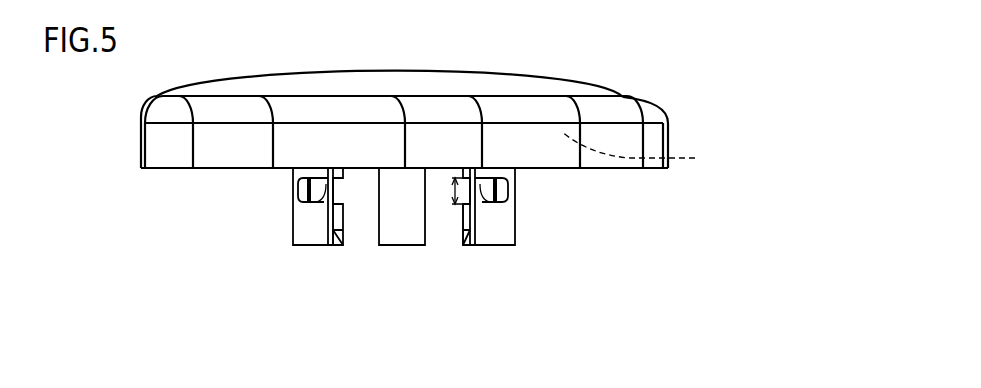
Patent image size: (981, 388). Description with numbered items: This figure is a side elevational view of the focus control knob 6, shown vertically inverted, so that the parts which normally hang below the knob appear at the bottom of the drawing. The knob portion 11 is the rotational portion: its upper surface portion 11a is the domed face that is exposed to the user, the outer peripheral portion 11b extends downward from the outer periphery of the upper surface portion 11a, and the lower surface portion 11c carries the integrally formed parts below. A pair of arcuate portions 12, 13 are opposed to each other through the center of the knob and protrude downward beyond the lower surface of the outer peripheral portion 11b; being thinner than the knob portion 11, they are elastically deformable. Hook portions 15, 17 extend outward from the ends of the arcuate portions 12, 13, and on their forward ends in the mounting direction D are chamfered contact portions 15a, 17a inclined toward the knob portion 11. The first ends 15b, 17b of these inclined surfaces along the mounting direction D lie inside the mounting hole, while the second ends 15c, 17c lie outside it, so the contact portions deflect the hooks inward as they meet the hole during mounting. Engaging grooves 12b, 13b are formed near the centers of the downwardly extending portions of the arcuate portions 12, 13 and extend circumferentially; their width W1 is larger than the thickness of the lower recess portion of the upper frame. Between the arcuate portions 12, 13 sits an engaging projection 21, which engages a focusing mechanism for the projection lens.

The focus control knob 6 is at (471, 62).
The knob portion 11 is at (734, 87).
The upper surface portion 11a is at (543, 82).
The outer peripheral portion 11b is at (657, 145).
The lower surface portion 11c is at (646, 150).
The arcuate portion 12 is at (506, 229).
The engaging groove 12b is at (508, 188).
The arcuate portion 13 is at (300, 231).
The engaging groove 13b is at (302, 187).
The hook portion 15 is at (465, 215).
The contact portion 15a is at (469, 240).
The first end 15b is at (470, 246).
The second end 15c is at (464, 243).
The hook portion 17 is at (342, 218).
The contact portion 17a is at (337, 247).
The first end 17b is at (340, 246).
The second end 17c is at (345, 241).
The engaging projection 21 is at (403, 232).
The width of engaging groove W1 is at (454, 190).
The mounting direction D is at (400, 287).